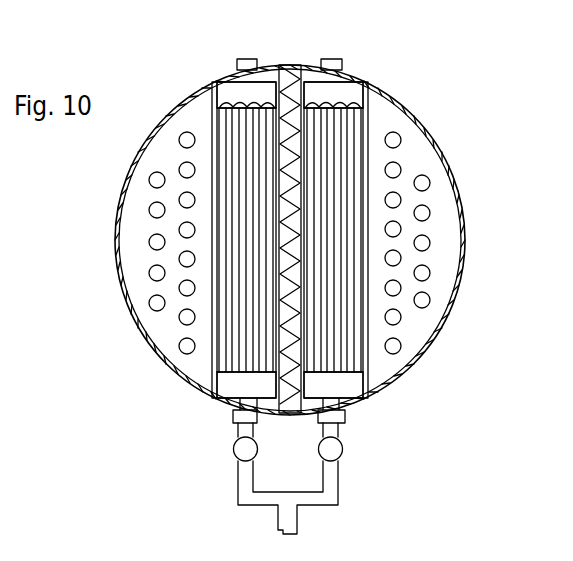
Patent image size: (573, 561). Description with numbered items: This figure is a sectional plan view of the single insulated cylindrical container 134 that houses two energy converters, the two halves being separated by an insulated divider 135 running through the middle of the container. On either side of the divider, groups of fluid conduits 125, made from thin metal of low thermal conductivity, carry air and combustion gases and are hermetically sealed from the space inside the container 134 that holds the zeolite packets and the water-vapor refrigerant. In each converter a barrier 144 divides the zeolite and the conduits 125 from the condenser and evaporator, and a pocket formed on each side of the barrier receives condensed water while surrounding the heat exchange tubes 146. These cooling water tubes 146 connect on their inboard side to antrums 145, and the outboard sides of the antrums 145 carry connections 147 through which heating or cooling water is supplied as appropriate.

The fluid conduits 125 is at (398, 163).
The cylindrical container 134 is at (460, 290).
The insulated divider 135 is at (298, 40).
The barrier 144 is at (212, 338).
The antrums 145 is at (225, 93).
The heat exchange tubes 146 is at (214, 108).
The connections 147 is at (300, 441).